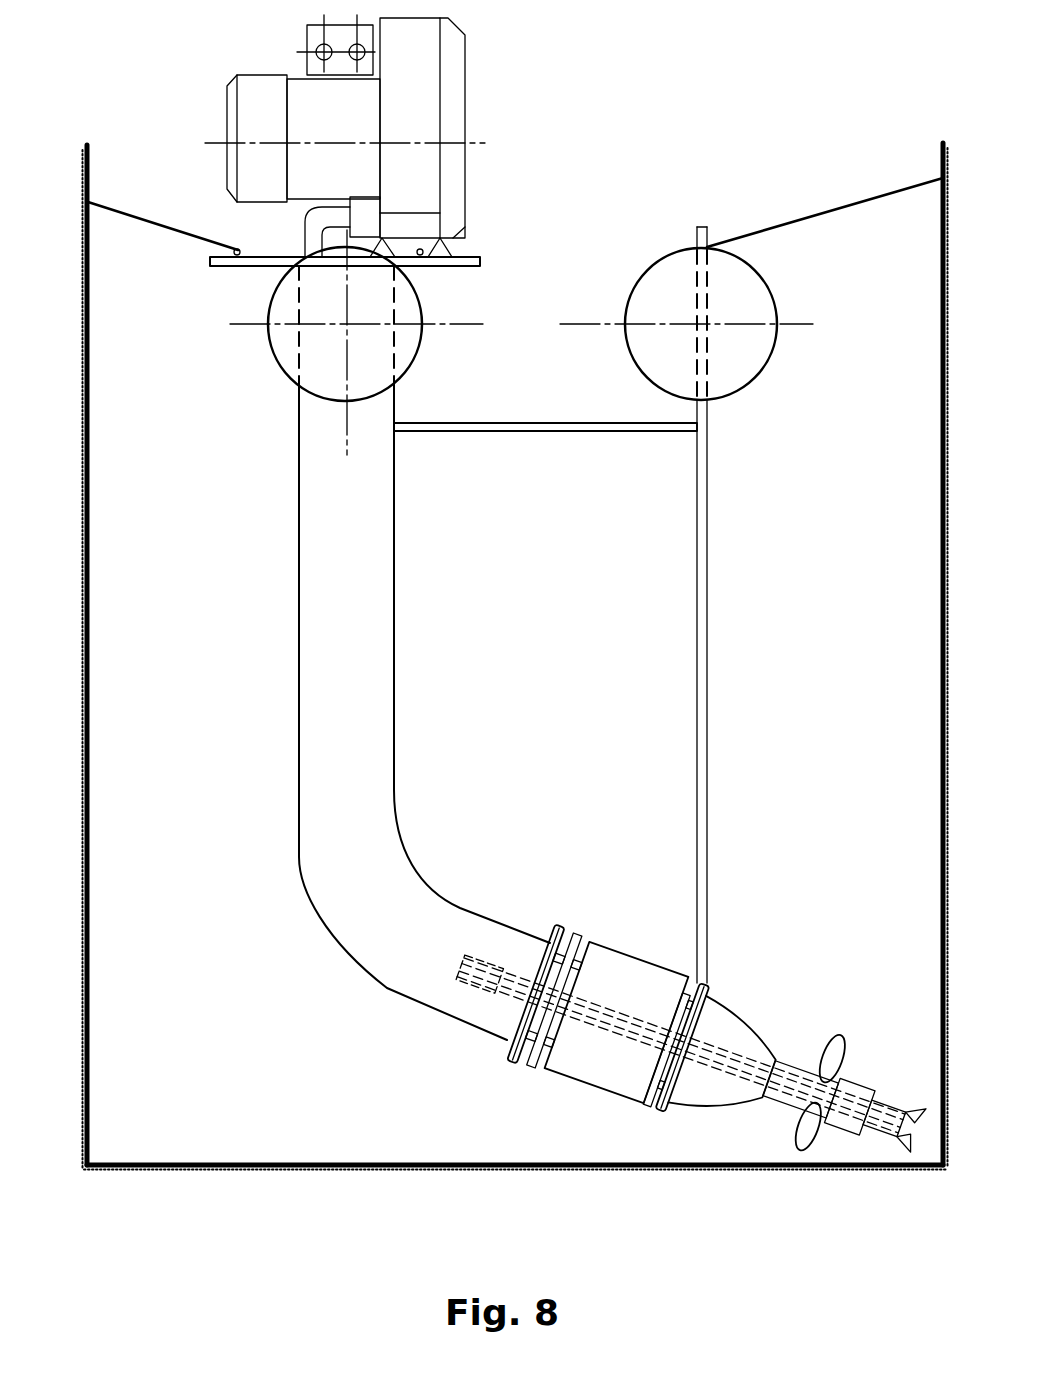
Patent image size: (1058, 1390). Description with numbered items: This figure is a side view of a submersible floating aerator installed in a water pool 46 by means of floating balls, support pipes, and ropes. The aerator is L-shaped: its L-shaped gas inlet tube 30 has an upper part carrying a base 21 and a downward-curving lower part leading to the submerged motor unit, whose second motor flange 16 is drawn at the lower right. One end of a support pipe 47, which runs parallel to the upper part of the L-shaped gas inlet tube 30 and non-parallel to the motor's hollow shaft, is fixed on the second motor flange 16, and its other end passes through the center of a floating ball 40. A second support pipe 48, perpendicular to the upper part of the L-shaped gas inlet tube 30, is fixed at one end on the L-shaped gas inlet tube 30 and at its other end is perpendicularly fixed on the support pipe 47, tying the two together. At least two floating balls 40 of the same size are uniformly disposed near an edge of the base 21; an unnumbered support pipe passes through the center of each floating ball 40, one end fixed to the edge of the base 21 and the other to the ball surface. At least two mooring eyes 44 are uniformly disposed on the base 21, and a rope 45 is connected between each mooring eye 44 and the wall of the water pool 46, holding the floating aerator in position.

The second motor flange 16 is at (712, 983).
The base 21 is at (480, 262).
The L-shaped gas inlet tube 30 is at (299, 816).
The floating ball 40 is at (282, 348).
The mooring eye 44 is at (235, 250).
The rope 45 is at (150, 216).
The water pool 46 is at (90, 143).
The support pipe 47 is at (697, 481).
The support pipe 48 is at (527, 432).